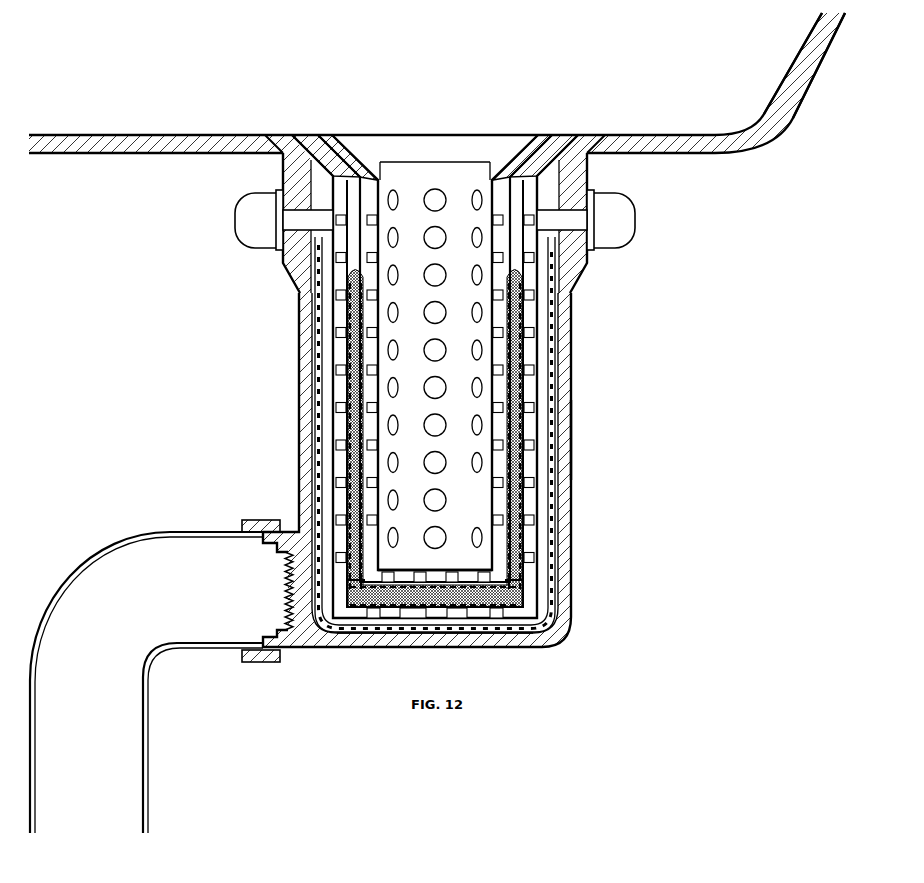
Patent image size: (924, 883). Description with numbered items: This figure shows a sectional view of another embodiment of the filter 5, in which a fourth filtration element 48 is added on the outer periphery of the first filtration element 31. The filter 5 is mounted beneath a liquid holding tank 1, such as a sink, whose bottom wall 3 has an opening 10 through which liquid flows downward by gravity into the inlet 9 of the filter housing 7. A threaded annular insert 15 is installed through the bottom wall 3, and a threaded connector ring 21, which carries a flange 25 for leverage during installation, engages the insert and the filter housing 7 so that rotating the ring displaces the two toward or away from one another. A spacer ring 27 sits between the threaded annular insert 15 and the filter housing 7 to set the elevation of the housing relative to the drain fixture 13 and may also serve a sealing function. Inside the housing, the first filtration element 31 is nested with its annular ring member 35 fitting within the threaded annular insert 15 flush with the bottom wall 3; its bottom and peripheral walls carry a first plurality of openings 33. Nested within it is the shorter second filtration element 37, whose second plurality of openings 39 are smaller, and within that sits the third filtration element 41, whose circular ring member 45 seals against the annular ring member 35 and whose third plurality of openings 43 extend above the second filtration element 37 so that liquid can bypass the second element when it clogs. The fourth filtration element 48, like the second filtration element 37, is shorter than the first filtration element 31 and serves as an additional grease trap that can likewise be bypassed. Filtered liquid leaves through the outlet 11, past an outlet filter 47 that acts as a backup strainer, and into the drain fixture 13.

The liquid holding tank 1 is at (818, 63).
The bottom wall 3 is at (153, 134).
The filter 5 is at (612, 443).
The filter housing 7 is at (572, 577).
The inlet 9 is at (435, 120).
The opening 10 is at (603, 134).
The outlet 11 is at (236, 500).
The drain fixture 13 is at (150, 745).
The threaded annular insert 15 is at (280, 134).
The threaded connector ring 21 is at (280, 250).
The flange 25 is at (232, 218).
The spacer ring 27 is at (597, 253).
The first filtration element 31 is at (535, 372).
The first plurality of openings 33 is at (535, 426).
The annular ring member 35 is at (560, 135).
The second filtration element 37 is at (530, 330).
The second plurality of openings 39 is at (520, 308).
The third filtration element 41 is at (412, 558).
The third plurality of openings 43 is at (471, 528).
The circular ring member 45 is at (527, 135).
The outlet filter 47 is at (284, 607).
The fourth filtration element 48 is at (498, 637).